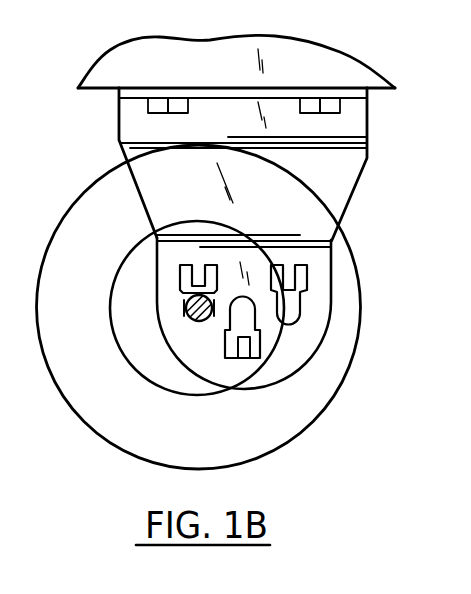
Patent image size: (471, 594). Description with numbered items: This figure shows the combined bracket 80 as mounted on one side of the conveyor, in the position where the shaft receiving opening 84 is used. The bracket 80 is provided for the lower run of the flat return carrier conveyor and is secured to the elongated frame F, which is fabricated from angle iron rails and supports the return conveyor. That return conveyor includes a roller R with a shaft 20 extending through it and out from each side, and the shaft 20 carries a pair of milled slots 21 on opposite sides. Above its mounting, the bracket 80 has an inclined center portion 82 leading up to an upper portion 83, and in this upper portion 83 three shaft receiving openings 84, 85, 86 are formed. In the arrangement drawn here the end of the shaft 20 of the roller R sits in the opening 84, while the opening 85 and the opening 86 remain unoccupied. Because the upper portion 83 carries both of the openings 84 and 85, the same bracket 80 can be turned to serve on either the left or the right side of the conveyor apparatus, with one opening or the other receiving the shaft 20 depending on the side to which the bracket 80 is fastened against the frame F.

The frame F is at (262, 63).
The roller R is at (260, 455).
The shaft 20 is at (192, 320).
The milled slots 21 is at (184, 308).
The bracket 80 is at (110, 139).
The inclined center portion 82 is at (338, 193).
The upper portion 83 is at (331, 315).
The shaft receiving opening 84 is at (303, 278).
The shaft receiving opening 85 is at (185, 282).
The shaft receiving opening 86 is at (247, 322).